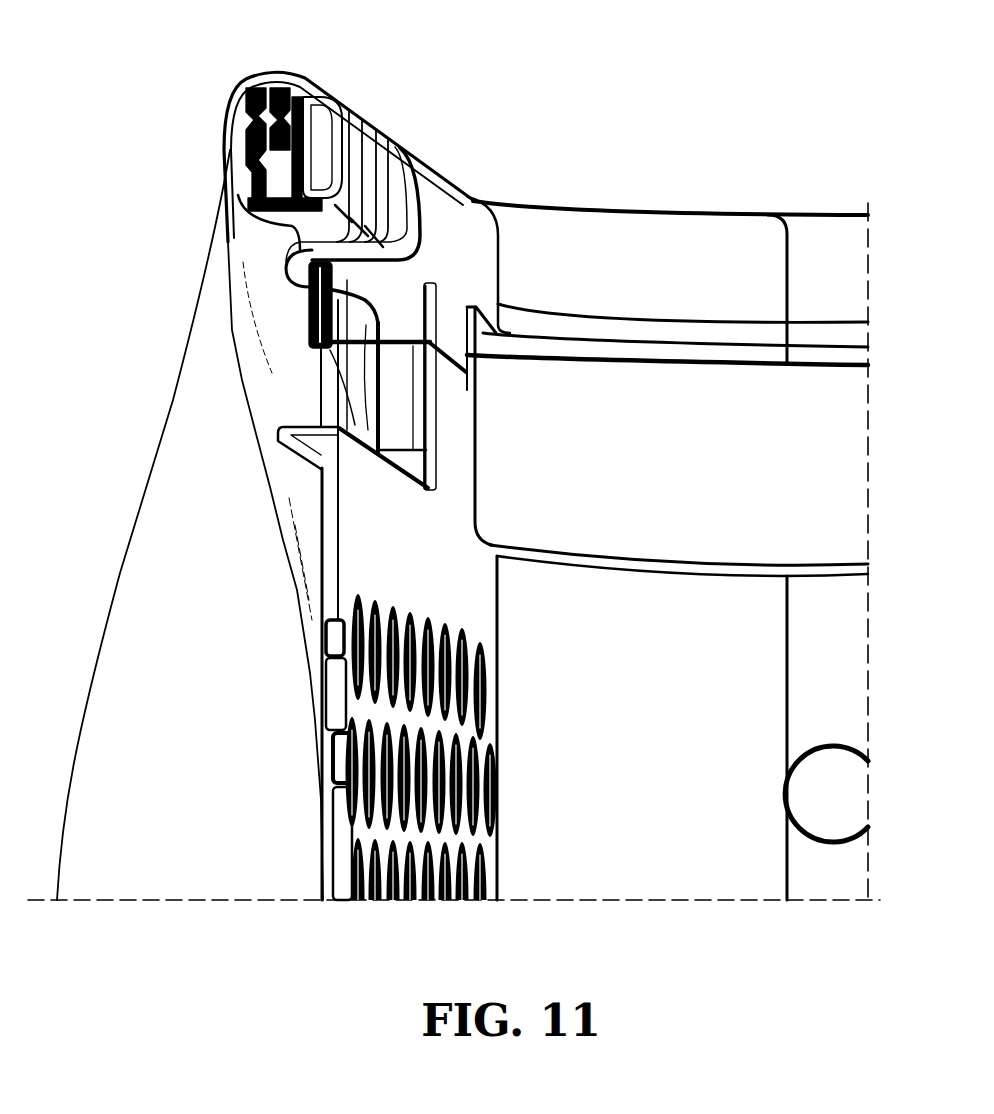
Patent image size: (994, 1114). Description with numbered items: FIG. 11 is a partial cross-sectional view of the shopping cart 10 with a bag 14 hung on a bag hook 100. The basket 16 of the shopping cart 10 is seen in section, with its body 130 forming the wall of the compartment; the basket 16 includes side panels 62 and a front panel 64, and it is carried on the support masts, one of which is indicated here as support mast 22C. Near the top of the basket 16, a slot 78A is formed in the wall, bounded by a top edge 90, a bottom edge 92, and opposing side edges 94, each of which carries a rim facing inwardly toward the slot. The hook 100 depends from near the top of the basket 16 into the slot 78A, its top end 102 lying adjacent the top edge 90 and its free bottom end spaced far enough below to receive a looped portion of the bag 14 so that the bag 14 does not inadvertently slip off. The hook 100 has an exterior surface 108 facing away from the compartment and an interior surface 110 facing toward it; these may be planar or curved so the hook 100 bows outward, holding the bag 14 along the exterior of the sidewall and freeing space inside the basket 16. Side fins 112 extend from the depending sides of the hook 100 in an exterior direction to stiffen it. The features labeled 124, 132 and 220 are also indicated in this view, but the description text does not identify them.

The shopping cart 10 is at (216, 83).
The bag 14 is at (178, 607).
The basket 16 is at (779, 458).
The cover 22C is at (415, 190).
The side panel 62 is at (357, 826).
The front panel 64 is at (830, 693).
The latch hook 78A is at (318, 420).
The top edge 90 is at (290, 233).
The bottom edge 92 is at (405, 412).
The side edges 94 is at (425, 413).
The hook 100 is at (310, 337).
The top end 102 is at (305, 385).
The exterior surface 108 is at (312, 310).
The interior surface 110 is at (383, 392).
The side fins 112 is at (313, 287).
The bumper 124 is at (278, 270).
The body 130 is at (840, 527).
The upper housing 132 is at (742, 238).
The ramp surface 220 is at (127, 742).